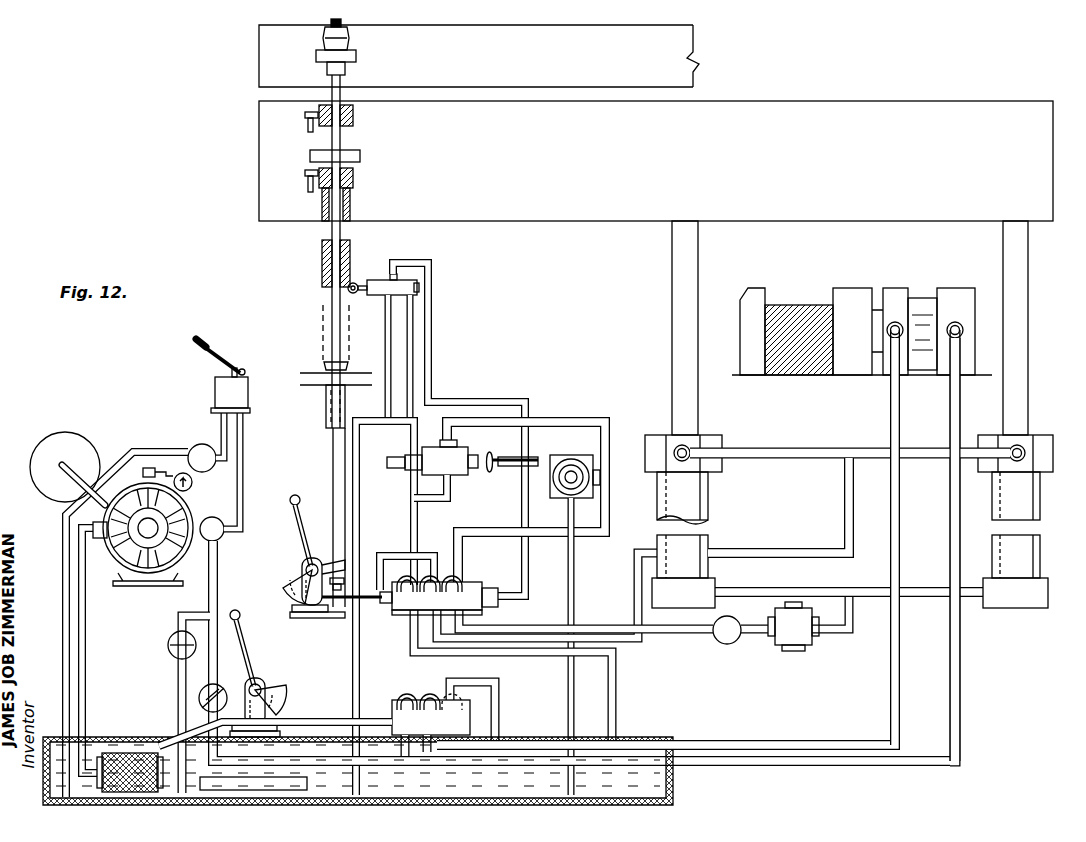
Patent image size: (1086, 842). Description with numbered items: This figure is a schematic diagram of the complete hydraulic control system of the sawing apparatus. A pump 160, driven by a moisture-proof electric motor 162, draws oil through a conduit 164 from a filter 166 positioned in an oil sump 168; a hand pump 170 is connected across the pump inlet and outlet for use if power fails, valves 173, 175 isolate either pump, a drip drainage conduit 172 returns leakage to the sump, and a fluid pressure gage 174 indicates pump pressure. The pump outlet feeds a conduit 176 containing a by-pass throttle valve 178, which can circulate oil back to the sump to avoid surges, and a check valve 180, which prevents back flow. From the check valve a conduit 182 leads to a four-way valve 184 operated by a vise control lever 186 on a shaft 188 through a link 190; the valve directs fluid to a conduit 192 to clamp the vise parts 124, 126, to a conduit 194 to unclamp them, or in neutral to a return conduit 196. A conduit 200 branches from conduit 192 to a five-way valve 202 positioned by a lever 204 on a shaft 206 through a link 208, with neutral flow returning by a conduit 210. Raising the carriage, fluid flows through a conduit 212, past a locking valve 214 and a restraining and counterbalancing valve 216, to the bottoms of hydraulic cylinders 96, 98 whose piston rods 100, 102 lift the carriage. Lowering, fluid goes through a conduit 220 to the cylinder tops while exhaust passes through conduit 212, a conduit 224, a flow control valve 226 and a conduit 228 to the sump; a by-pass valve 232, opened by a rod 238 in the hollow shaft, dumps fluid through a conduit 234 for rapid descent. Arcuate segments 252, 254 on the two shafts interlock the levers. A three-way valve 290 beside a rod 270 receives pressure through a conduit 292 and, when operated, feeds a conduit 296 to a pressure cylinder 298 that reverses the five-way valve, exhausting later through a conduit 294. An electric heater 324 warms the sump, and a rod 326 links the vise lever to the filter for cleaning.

The hydraulic cylinder 96 is at (1042, 545).
The hydraulic cylinder 98 is at (712, 505).
The piston rod 100 is at (1028, 290).
The piston rod 102 is at (684, 288).
The vise part 124 is at (764, 288).
The vise part 126 is at (852, 300).
The pump 160 is at (142, 575).
The electric motor 162 is at (60, 440).
The conduit 164 is at (82, 658).
The filter 166 is at (125, 745).
The oil sump 168 is at (673, 786).
The hand pump 170 is at (248, 396).
The drip drainage conduit 172 is at (60, 657).
The valve 173 is at (204, 444).
The fluid pressure gage 174 is at (192, 495).
The valve 175 is at (224, 524).
The conduit 176 is at (220, 565).
The by-pass throttle valve 178 is at (168, 655).
The check valve 180 is at (198, 692).
The conduit 182 is at (302, 765).
The four-way valve 184 is at (455, 720).
The vise control lever 186 is at (248, 652).
The shaft 188 is at (262, 684).
The link 190 is at (298, 718).
The conduit 192 is at (795, 767).
The conduit 194 is at (793, 740).
The conduit 196 is at (495, 702).
The conduit 200 is at (610, 712).
The five-way valve 202 is at (470, 580).
The lever 204 is at (300, 526).
The shaft 206 is at (308, 566).
The link 208 is at (350, 605).
The conduit 210 is at (396, 556).
The conduit 212 is at (584, 622).
The locking or safety valve 214 is at (722, 642).
The restraining and counterbalancing valve 216 is at (798, 648).
The conduit 220 is at (790, 548).
The conduit 224 is at (483, 532).
The flow control valve 226 is at (596, 450).
The conduit 228 is at (512, 482).
The by-pass valve 232 is at (415, 447).
The conduit 234 is at (447, 498).
The rod 238 is at (532, 432).
The arcuate segment 252 is at (284, 588).
The arcuate segment 254 is at (283, 698).
The rod 270 is at (300, 378).
The three-way valve 290 is at (384, 282).
The conduit 292 is at (412, 330).
The conduit 294 is at (360, 465).
The conduit 296 is at (490, 400).
The pressure cylinder 298 is at (502, 590).
The electric heater 324 is at (300, 786).
The rod 326 is at (195, 730).